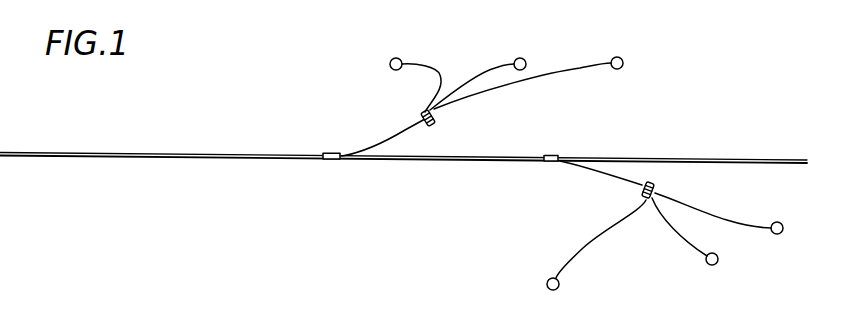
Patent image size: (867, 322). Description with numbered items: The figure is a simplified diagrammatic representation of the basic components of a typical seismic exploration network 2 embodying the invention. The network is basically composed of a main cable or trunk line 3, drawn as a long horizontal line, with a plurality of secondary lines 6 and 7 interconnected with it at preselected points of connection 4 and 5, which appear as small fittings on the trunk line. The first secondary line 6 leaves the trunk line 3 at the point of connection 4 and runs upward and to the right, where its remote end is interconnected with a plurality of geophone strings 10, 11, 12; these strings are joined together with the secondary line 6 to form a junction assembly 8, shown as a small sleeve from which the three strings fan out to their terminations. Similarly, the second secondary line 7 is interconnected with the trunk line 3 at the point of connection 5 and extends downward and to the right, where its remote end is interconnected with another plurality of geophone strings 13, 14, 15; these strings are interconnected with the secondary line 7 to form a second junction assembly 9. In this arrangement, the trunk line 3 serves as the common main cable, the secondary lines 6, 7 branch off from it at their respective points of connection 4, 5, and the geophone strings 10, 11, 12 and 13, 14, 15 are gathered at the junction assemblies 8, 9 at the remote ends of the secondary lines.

The seismic exploration network 2 is at (206, 173).
The trunk line 3 is at (153, 154).
The point of connection 4 is at (332, 161).
The point of connection 5 is at (550, 163).
The secondary line 6 is at (382, 142).
The secondary line 7 is at (603, 172).
The junction assembly 8 is at (438, 124).
The junction assembly 9 is at (660, 187).
The geophone string 10 is at (426, 64).
The geophone string 11 is at (496, 67).
The geophone string 12 is at (580, 68).
The geophone string 13 is at (588, 245).
The geophone string 14 is at (683, 241).
The geophone string 15 is at (746, 225).